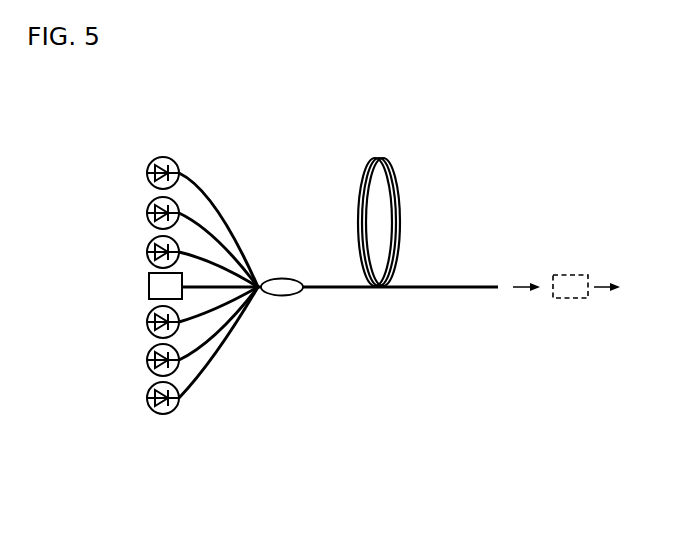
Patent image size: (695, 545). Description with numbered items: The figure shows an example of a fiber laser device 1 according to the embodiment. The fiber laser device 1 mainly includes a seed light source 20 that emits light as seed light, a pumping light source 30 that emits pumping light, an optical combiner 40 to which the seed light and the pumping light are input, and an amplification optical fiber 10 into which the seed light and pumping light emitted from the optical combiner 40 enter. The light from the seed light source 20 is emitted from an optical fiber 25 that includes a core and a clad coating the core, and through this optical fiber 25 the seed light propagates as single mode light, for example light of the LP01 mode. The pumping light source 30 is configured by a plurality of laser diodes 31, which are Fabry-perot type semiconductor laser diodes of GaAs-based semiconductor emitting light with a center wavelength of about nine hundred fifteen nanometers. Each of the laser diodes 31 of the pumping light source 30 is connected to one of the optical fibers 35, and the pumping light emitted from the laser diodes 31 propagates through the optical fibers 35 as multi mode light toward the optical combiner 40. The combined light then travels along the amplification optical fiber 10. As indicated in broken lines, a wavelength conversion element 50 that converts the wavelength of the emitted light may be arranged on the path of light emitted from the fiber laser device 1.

The fiber laser device 1 is at (489, 139).
The amplification optical fiber 10 is at (395, 287).
The seed light source 20 is at (132, 274).
The optical fiber 25 is at (233, 231).
The pumping light source 30 is at (142, 138).
The laser diode 31 is at (136, 289).
The optical fiber 35 is at (219, 288).
The optical combiner 40 is at (288, 289).
The wavelength conversion element 50 is at (578, 277).